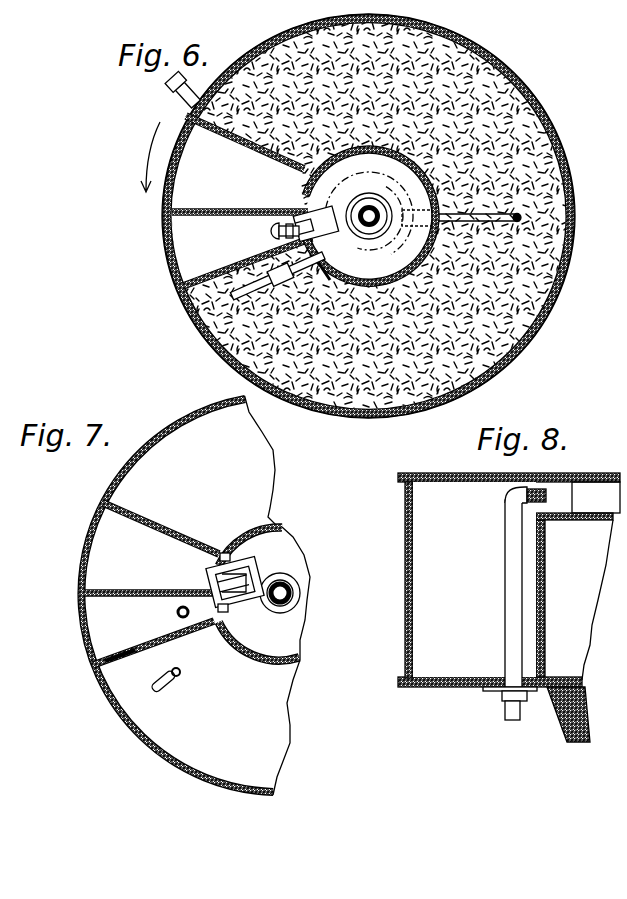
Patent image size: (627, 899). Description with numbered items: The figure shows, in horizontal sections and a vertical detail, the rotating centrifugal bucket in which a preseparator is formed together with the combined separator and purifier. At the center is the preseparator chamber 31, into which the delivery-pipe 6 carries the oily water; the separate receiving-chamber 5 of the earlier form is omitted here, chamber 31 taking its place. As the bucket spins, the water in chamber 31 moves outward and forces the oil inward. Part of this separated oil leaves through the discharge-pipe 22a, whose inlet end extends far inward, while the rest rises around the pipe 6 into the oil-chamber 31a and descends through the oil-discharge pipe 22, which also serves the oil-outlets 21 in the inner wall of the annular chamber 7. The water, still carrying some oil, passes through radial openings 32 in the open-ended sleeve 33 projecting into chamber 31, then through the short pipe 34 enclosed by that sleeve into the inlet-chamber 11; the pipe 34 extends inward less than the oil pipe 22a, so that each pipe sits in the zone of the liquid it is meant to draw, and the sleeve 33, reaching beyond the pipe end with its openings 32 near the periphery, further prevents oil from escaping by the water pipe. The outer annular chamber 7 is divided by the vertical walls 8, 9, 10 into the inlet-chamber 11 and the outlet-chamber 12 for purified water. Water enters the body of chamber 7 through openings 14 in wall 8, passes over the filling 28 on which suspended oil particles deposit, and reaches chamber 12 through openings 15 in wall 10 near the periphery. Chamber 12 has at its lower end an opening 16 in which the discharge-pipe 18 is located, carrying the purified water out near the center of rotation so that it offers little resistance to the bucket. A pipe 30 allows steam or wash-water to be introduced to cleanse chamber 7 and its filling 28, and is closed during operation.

In FIG. 6, the receiving-chamber 5 is at (183, 328).
In FIG. 6, the pipe 6 is at (378, 211).
In FIG. 7, the pipe 6 is at (283, 592).
In FIG. 6, the annular chamber 7 is at (553, 144).
In FIG. 7, the annular chamber 7 is at (195, 595).
In FIG. 8, the annular chamber 7 is at (406, 604).
In FIG. 6, the wall 8 is at (283, 166).
In FIG. 7, the wall 8 is at (160, 521).
In FIG. 6, the wall 9 is at (188, 208).
In FIG. 7, the wall 9 is at (123, 595).
In FIG. 8, the wall 9 is at (418, 550).
In FIG. 6, the wall 10 is at (222, 270).
In FIG. 7, the wall 10 is at (178, 633).
In FIG. 6, the inlet-chamber 11 is at (239, 165).
In FIG. 7, the inlet-chamber 11 is at (151, 548).
In FIG. 6, the outlet-chamber 12 is at (241, 249).
In FIG. 7, the outlet-chamber 12 is at (148, 629).
In FIG. 8, the outlet-chamber 12 is at (474, 579).
In FIG. 6, the openings 14 is at (257, 150).
In FIG. 7, the openings 15 is at (138, 660).
In FIG. 6, the opening 16 is at (278, 213).
In FIG. 6, the discharge-pipe 18 is at (263, 230).
In FIG. 7, the discharge-pipe 18 is at (178, 612).
In FIG. 8, the discharge-pipe 18 is at (505, 540).
In FIG. 6, the oil-outlets 21 is at (330, 277).
In FIG. 6, the oil-discharge pipe 22 is at (237, 296).
In FIG. 7, the oil-discharge pipe 22 is at (167, 682).
In FIG. 6, the discharge-pipe 22a is at (576, 250).
In FIG. 6, the filling 28 is at (478, 282).
In FIG. 6, the pipe 30 is at (183, 102).
In FIG. 6, the central chamber 31 is at (370, 216).
In FIG. 7, the central chamber 31 is at (259, 594).
In FIG. 8, the central chamber 31 is at (574, 595).
In FIG. 8, the oil-chamber 31a is at (596, 497).
In FIG. 7, the openings 32 is at (240, 566).
In FIG. 6, the sleeve 33 is at (352, 188).
In FIG. 7, the sleeve 33 is at (255, 578).
In FIG. 7, the pipe 34 is at (213, 576).